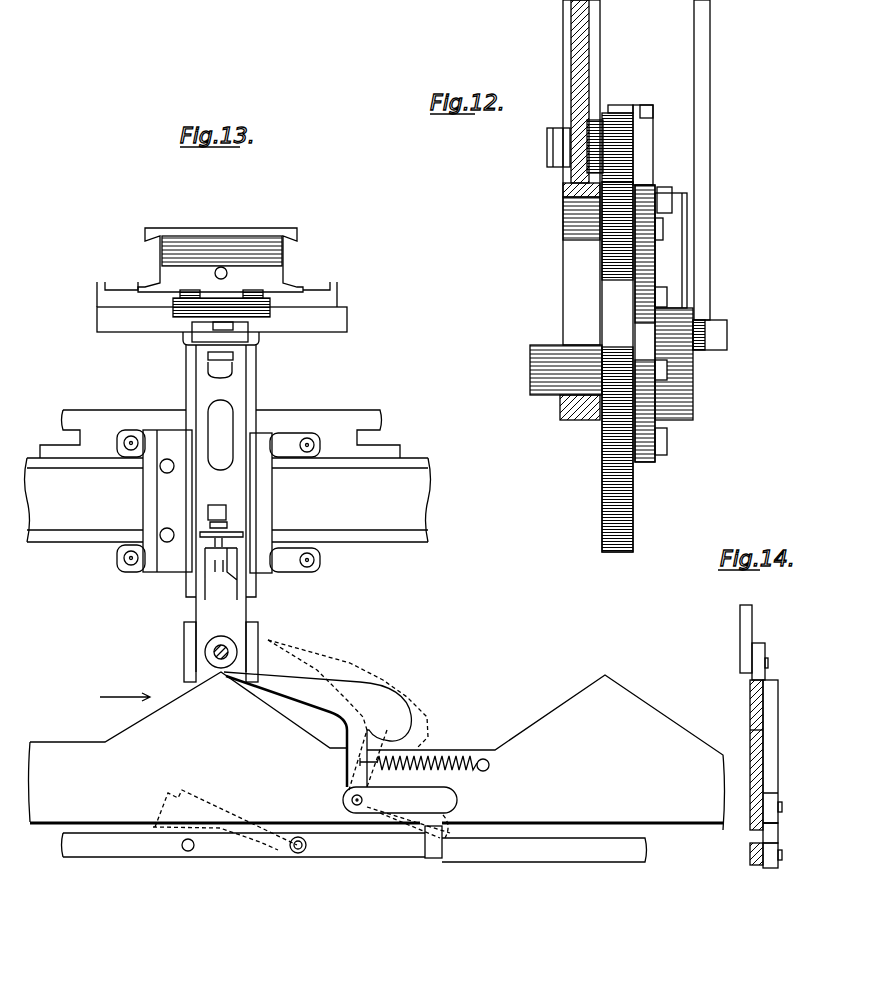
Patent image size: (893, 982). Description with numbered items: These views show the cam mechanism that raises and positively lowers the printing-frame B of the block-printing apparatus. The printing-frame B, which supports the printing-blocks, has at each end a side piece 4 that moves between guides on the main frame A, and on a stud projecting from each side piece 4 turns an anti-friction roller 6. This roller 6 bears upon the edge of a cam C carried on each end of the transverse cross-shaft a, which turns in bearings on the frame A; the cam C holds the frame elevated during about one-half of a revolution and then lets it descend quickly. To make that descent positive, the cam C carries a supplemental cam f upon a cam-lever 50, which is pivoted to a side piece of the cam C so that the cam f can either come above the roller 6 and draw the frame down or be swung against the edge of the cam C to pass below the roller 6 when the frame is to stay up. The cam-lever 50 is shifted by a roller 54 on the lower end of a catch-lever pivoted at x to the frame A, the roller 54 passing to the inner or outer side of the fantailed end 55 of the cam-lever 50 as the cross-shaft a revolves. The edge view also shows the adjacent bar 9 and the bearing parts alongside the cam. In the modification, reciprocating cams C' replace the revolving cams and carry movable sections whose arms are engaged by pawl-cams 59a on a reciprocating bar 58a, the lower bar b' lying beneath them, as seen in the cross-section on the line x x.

In FIG. 12, the side piece 4 is at (593, 47).
In FIG. 13, the side piece 4 is at (221, 508).
In FIG. 12, the anti-friction roller 6 is at (620, 132).
In FIG. 13, the anti-friction roller 6 is at (204, 655).
In FIG. 14, the anti-friction roller 6 is at (758, 655).
In FIG. 12, the supplemental cam f is at (622, 113).
In FIG. 12, the cam-lever 50 is at (647, 158).
In FIG. 12, the bar 9 is at (712, 213).
In FIG. 12, the fantailed end 55 is at (673, 255).
In FIG. 12, the roller 54 is at (688, 312).
In FIG. 12, the cam C is at (637, 367).
In FIG. 12, the cross-shaft a is at (532, 378).
In FIG. 13, the printing-frame B is at (226, 260).
In FIG. 13, the main frame A is at (228, 500).
In FIG. 13, the pivot / section line x is at (221, 628).
In FIG. 13, the reciprocating cam C' is at (377, 751).
In FIG. 14, the reciprocating cam C' is at (740, 755).
In FIG. 13, the pawl-cam 59a is at (412, 817).
In FIG. 14, the pawl-cam 59a is at (778, 835).
In FIG. 13, the reciprocating bar 58a is at (530, 865).
In FIG. 13, the bar b' is at (244, 836).
In FIG. 14, the bar b' is at (759, 871).